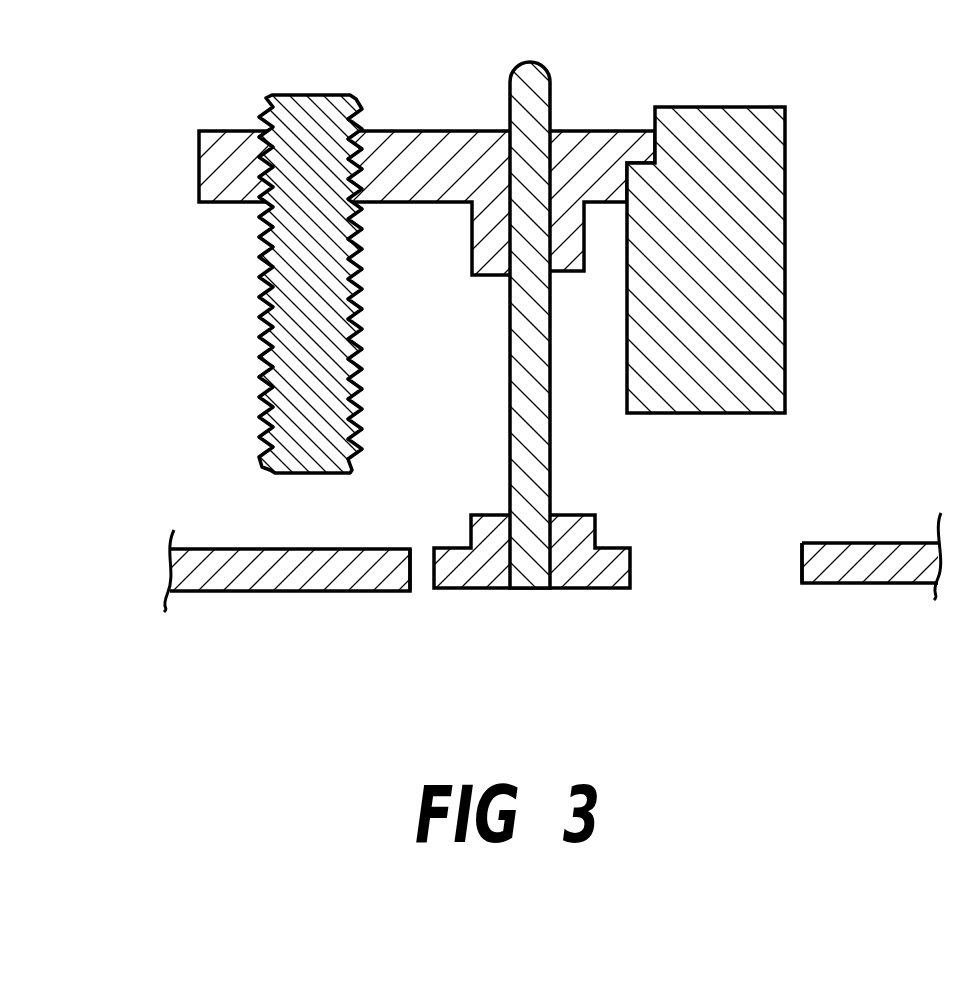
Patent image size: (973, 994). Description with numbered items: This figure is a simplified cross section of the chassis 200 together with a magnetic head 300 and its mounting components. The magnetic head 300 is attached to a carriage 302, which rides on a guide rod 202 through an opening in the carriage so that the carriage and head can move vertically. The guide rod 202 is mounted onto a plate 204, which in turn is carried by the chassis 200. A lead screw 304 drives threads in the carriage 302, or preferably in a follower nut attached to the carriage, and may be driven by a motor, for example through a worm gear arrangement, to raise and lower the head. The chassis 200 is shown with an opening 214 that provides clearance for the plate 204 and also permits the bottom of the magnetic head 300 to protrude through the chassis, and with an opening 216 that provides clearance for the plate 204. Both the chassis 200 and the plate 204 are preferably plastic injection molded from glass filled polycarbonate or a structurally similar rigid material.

The chassis 200 is at (205, 593).
The guide rod 202 is at (532, 62).
The plate 204 is at (477, 590).
The opening 214 is at (800, 557).
The opening 216 is at (411, 570).
The magnetic head 300 is at (725, 107).
The carriage 302 is at (582, 131).
The lead screw 304 is at (312, 95).